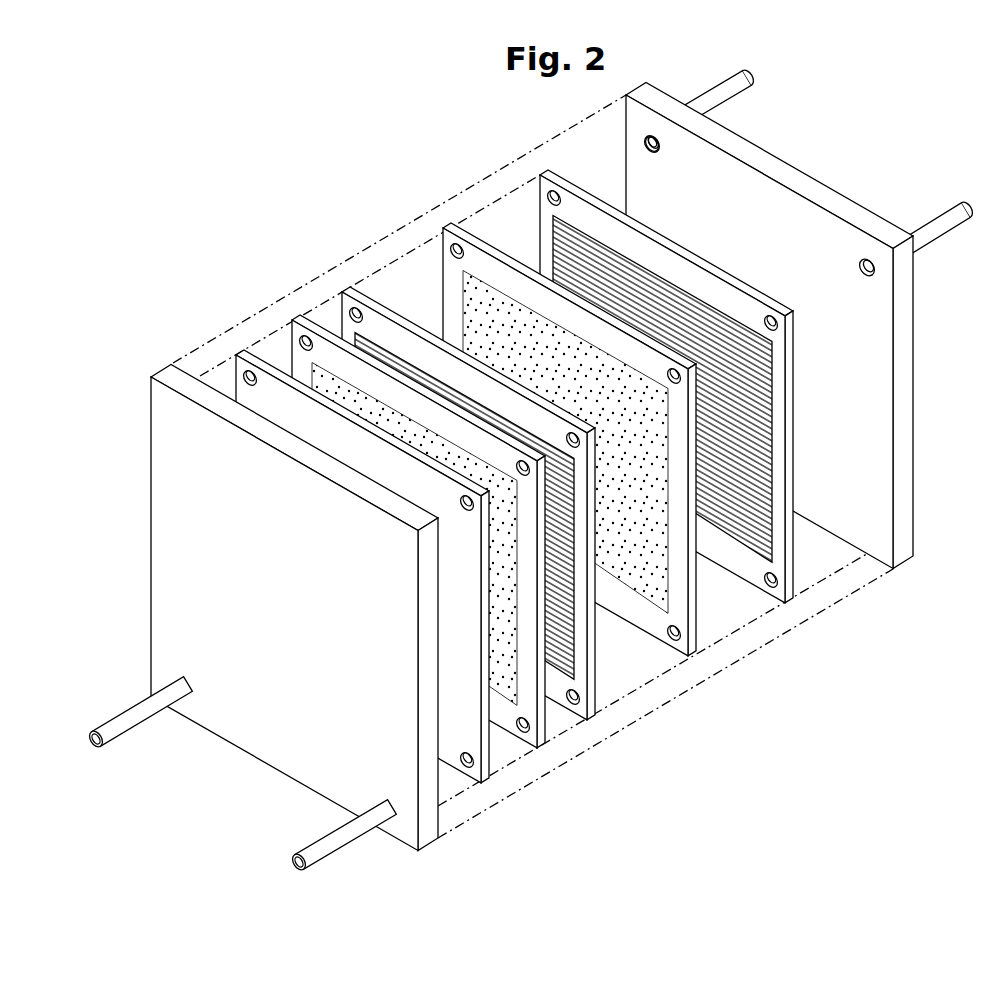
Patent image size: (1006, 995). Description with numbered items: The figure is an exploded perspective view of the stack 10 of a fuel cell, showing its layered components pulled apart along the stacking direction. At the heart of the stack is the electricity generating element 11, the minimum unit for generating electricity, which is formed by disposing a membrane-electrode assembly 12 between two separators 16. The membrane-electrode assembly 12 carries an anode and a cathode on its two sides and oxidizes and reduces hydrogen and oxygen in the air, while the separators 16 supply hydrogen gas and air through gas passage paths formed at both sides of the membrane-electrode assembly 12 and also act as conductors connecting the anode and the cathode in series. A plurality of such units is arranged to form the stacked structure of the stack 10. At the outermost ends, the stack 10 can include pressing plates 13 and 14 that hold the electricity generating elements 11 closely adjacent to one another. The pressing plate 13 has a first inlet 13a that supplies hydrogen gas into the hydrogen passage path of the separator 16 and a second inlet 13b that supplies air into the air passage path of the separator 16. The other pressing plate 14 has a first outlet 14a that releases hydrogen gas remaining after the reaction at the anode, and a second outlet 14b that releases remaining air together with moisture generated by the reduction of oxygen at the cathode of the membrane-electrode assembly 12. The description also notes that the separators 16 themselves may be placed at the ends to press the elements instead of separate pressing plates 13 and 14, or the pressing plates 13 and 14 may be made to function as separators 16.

The stack 10 is at (530, 468).
The electricity generating element 11 is at (546, 476).
The membrane-electrode assembly 12 is at (697, 645).
The pressing plate 13 is at (912, 390).
The first inlet 13a is at (707, 92).
The second inlet 13b is at (930, 221).
The pressing plate 14 is at (430, 830).
The first outlet 14a is at (337, 842).
The second outlet 14b is at (125, 712).
The separator 16 is at (598, 470).